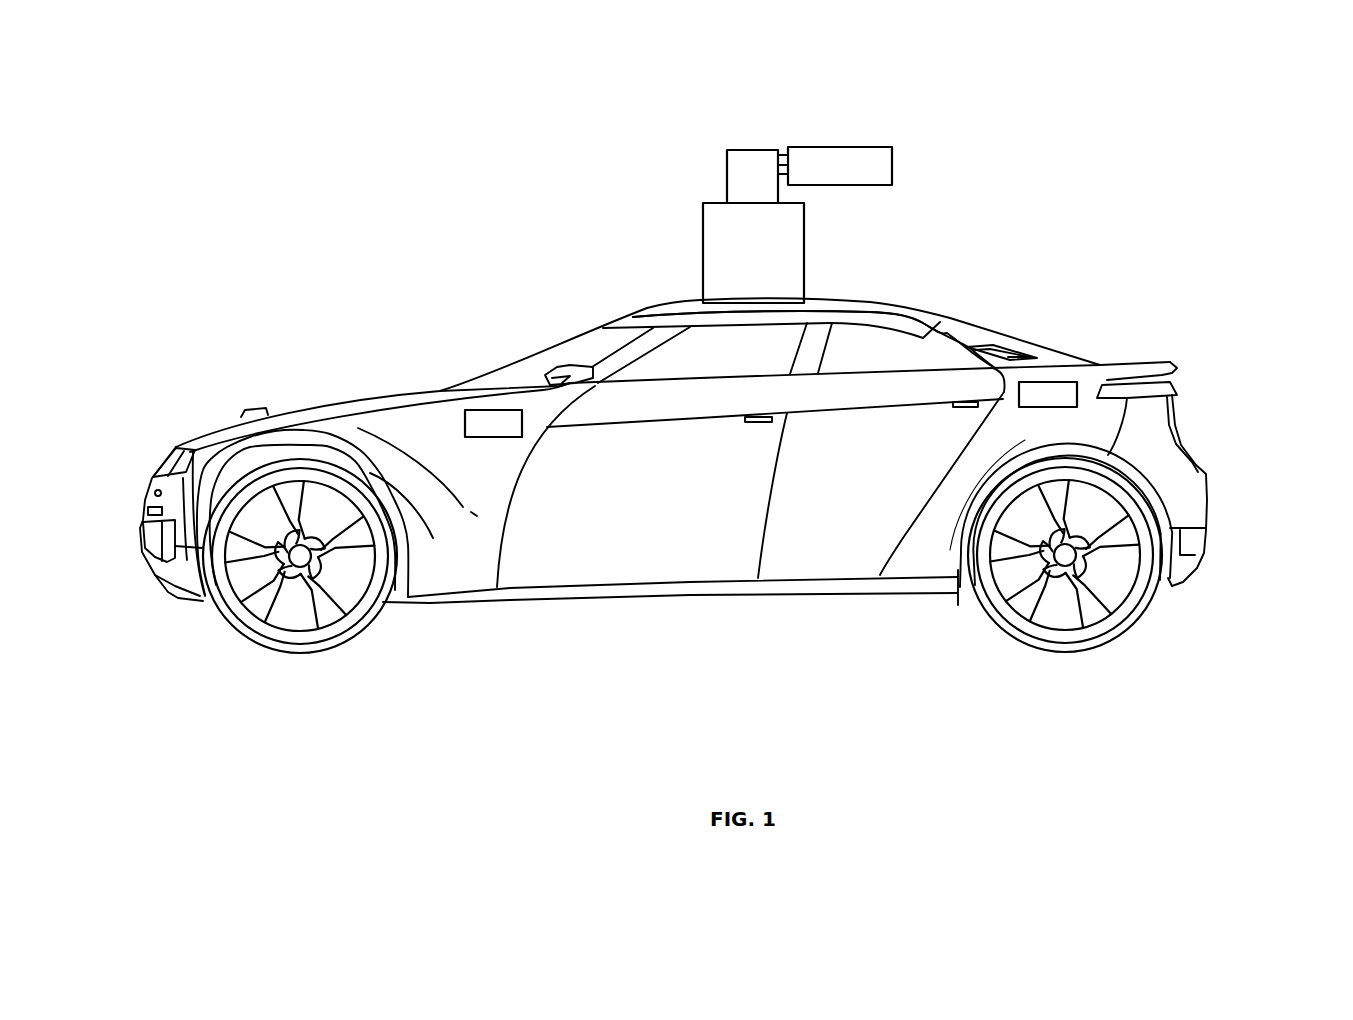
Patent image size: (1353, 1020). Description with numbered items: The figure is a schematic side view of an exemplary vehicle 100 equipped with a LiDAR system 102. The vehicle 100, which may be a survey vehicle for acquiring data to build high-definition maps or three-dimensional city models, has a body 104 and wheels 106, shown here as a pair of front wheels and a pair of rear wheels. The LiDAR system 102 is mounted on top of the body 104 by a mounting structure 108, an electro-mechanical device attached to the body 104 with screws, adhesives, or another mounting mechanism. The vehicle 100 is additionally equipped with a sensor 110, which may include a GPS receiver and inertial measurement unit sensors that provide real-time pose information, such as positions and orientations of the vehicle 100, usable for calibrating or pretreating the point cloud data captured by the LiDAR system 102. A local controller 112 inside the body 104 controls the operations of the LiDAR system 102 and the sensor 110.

The vehicle 100 is at (727, 731).
The LiDAR system 102 is at (805, 108).
The body 104 is at (556, 270).
The wheel 106 is at (1195, 620).
The mounting structure 108 is at (818, 262).
The sensor 110 is at (480, 400).
The local controller 112 is at (1083, 371).